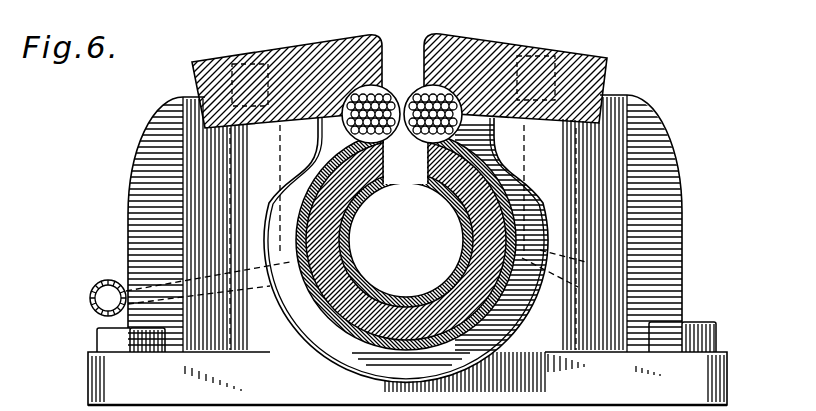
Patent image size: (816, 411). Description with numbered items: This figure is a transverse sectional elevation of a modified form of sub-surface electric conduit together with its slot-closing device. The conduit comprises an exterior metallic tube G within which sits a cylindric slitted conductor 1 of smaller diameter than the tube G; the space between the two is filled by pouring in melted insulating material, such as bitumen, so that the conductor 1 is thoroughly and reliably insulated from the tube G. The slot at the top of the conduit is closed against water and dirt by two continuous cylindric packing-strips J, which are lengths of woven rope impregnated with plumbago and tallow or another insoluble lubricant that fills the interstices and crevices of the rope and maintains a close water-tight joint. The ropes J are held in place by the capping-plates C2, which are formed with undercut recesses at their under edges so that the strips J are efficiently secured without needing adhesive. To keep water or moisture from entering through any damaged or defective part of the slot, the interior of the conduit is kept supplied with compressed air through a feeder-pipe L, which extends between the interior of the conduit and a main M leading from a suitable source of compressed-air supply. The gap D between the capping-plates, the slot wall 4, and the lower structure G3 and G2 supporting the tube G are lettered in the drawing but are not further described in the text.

The capping-plates C2 is at (344, 50).
The gap between clamping jaws D is at (399, 53).
The packing-strips J is at (410, 94).
The slot in bearing box 4 is at (405, 155).
The exterior metallic tube G is at (350, 322).
The cylindric slitted conductor 1 is at (356, 220).
The standard of bearing G3 is at (584, 170).
The base of bearing G2 is at (407, 378).
The feeder-pipes L is at (341, 275).
The mains M is at (90, 297).